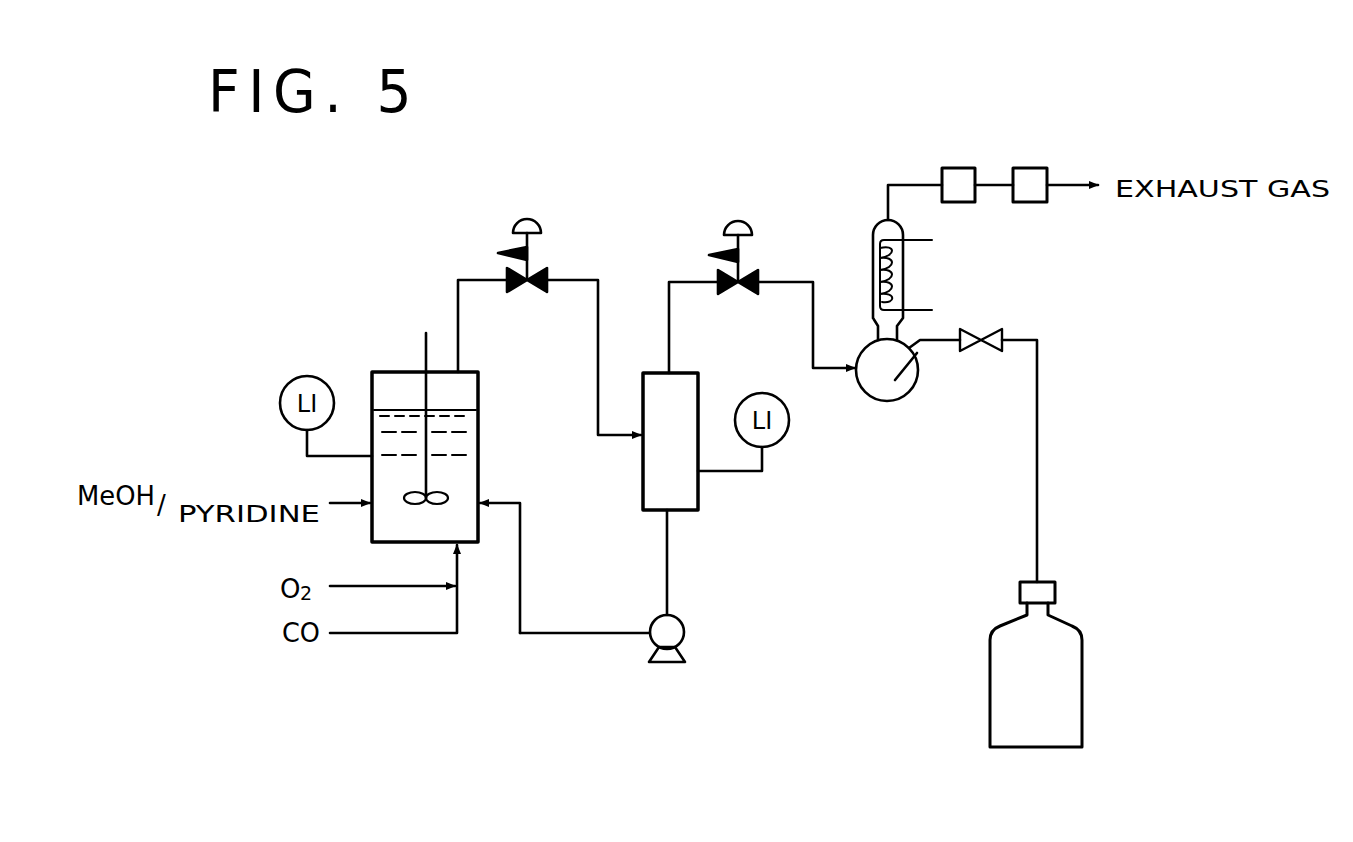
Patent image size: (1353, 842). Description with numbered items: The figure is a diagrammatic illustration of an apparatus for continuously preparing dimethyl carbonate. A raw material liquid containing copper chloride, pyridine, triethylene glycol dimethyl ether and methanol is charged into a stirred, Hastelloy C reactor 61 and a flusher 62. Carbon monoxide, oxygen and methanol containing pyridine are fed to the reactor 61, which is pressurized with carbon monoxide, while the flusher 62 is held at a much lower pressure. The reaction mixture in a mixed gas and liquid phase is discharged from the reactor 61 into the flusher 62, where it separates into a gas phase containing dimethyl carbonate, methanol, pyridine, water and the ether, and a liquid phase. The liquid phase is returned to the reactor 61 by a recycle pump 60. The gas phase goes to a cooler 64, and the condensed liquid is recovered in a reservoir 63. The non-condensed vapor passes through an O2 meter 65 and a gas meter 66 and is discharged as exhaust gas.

The recycle pump 60 is at (684, 628).
The reactor 61 is at (478, 447).
The flusher 62 is at (698, 497).
The reservoir 63 is at (990, 710).
The cooler 64 is at (903, 275).
The O2 meter 65 is at (957, 168).
The gas meter 66 is at (1033, 168).